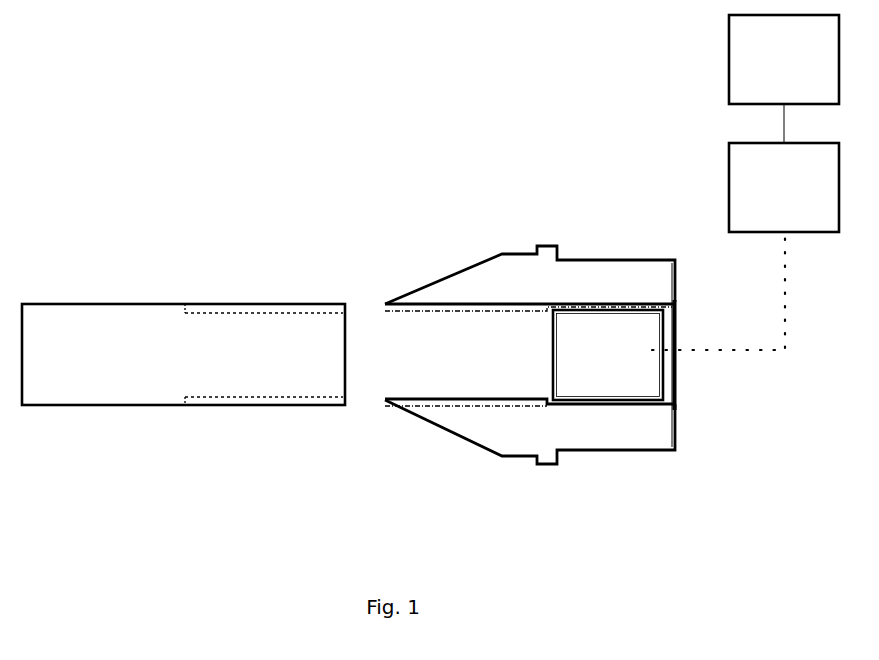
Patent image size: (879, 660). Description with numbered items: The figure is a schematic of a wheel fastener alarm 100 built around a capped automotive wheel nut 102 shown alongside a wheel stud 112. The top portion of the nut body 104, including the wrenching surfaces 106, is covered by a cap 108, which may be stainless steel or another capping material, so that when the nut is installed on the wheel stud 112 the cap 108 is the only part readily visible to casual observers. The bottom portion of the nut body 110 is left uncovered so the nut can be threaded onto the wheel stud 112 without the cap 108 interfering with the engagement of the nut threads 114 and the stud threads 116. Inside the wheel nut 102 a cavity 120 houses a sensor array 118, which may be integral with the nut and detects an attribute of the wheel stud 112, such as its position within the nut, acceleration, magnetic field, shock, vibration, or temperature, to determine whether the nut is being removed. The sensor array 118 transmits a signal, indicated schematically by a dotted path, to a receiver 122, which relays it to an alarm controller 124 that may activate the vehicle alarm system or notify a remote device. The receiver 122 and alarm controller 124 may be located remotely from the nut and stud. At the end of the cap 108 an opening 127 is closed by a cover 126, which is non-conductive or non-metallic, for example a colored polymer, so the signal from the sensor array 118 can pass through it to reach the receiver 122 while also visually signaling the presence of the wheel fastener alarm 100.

The wheel fastener alarm 100 is at (417, 89).
The capped automotive wheel nut 102 is at (527, 283).
The nut body 104 is at (602, 430).
The wrenching surfaces 106 is at (648, 450).
The cap 108 is at (593, 247).
The bottom portion of the nut body 110 is at (458, 297).
The wheel stud 112 is at (140, 322).
The nut threads 114 is at (425, 407).
The stud threads 116 is at (215, 395).
The sensor array 118 is at (653, 387).
The cavity 120 is at (528, 355).
The receiver 122 is at (738, 154).
The alarm controller 124 is at (740, 33).
The cover 126 is at (677, 378).
The opening 127 is at (669, 333).